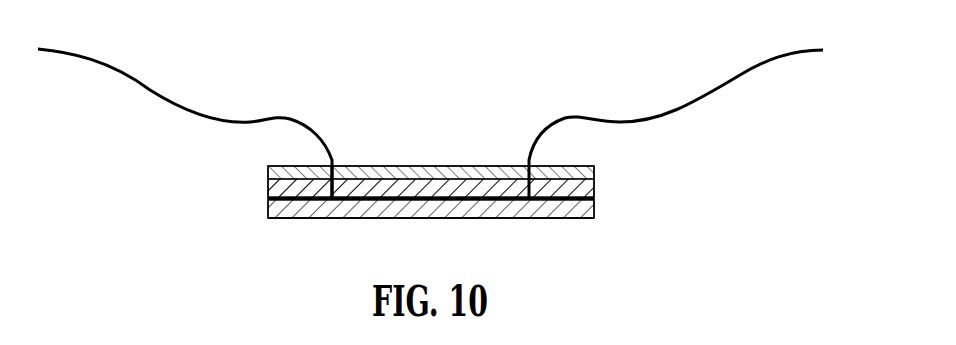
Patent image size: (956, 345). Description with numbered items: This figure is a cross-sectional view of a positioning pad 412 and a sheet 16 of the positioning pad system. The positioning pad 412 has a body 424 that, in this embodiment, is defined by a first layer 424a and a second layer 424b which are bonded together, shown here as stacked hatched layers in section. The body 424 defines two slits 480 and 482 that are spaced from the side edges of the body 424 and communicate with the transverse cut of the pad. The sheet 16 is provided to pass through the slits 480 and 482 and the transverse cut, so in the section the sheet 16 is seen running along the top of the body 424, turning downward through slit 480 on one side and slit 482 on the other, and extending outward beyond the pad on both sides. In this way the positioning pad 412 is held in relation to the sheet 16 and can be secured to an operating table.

The sheet 16 is at (763, 57).
The positioning pad 412 is at (306, 224).
The body 424 is at (268, 180).
The first layer 424a is at (574, 212).
The second layer 424b is at (440, 168).
The slit 480 is at (350, 176).
The slit 482 is at (533, 182).